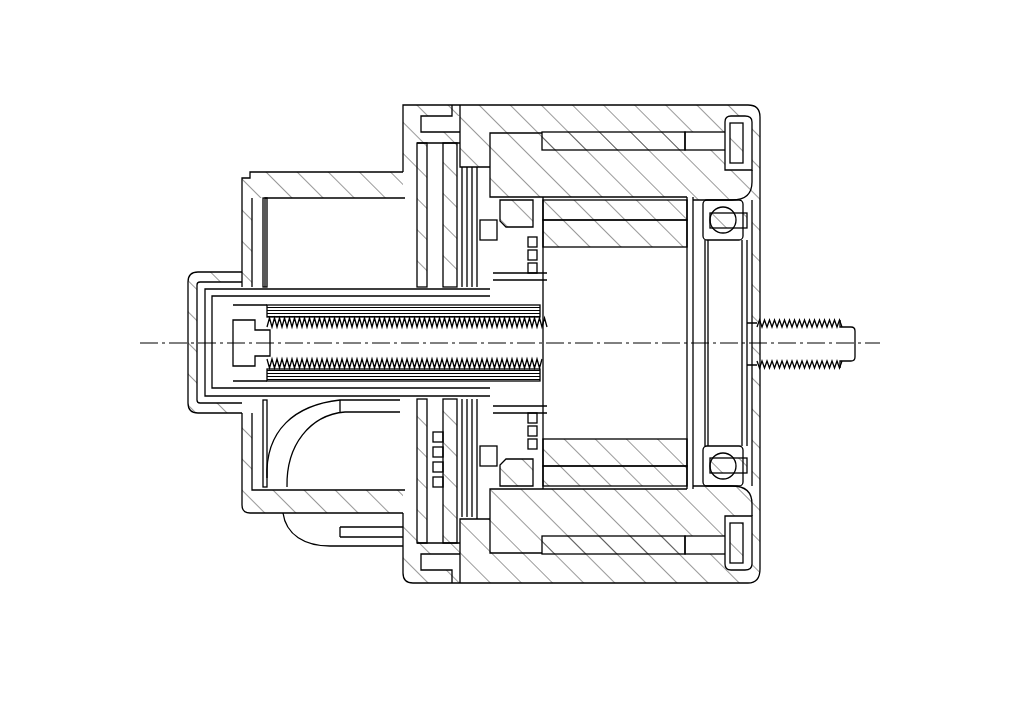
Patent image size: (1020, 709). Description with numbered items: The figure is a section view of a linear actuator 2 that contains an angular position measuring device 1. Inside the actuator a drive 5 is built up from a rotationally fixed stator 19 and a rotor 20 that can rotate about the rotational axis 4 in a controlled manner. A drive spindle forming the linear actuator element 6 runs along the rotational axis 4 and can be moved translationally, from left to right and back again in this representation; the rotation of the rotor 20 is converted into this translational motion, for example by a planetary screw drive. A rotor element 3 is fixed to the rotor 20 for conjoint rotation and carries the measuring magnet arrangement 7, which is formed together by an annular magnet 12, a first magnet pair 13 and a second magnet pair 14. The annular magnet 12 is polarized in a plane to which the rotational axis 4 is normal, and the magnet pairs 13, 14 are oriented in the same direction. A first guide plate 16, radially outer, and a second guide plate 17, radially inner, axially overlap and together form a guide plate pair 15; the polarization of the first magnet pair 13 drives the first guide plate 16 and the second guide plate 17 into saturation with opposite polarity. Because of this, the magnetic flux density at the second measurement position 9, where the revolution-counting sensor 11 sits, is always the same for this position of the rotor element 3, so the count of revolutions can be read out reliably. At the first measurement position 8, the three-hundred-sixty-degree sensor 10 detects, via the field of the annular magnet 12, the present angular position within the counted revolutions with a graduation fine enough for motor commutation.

The angular position measuring device 1 is at (102, 90).
The linear actuator 2 is at (745, 82).
The rotor element 3 is at (465, 425).
The rotational axis 4 is at (842, 324).
The drive 5 is at (843, 172).
The linear actuator element 6 is at (800, 370).
The measuring magnet arrangement 7 is at (121, 318).
The first measurement position 8 is at (325, 376).
The second measurement position 9 is at (172, 322).
The 360° sensor 10 is at (447, 400).
The revolution-counting sensor 11 is at (242, 262).
The annular magnet 12 is at (478, 205).
The first magnet pair 13 is at (450, 200).
The second magnet pair 14 is at (242, 437).
The guide plate pair 15 is at (142, 104).
The first guide plate 16 is at (403, 158).
The second guide plate 17 is at (420, 185).
The stator 19 is at (717, 180).
The rotor 20 is at (745, 222).